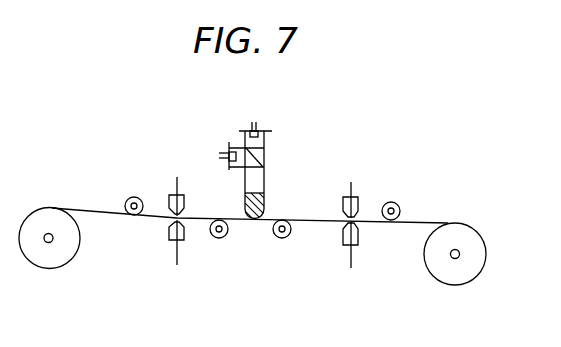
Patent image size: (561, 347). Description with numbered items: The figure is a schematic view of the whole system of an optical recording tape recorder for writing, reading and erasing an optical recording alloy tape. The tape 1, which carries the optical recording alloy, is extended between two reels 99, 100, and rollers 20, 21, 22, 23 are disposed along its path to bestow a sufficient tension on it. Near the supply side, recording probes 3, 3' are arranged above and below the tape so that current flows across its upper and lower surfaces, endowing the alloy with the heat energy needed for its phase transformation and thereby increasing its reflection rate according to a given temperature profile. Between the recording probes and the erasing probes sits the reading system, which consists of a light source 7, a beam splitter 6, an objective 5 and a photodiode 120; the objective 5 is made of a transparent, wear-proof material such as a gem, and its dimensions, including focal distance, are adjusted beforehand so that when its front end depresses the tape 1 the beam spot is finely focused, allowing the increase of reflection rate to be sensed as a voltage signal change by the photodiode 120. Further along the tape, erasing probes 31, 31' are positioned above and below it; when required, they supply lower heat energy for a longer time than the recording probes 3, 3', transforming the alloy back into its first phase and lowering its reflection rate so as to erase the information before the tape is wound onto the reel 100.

The tape 1 is at (97, 208).
The recording probe 3 is at (164, 192).
The recording probe 3' is at (163, 247).
The objective 5 is at (264, 203).
The beam splitter 6 is at (264, 162).
The light source 7 is at (219, 150).
The roller 20 is at (133, 197).
The roller 21 is at (216, 239).
The roller 22 is at (282, 239).
The roller 23 is at (395, 202).
The erasing probe 31 is at (366, 180).
The erasing probe 31' is at (374, 254).
The reel 99 is at (67, 264).
The reel 100 is at (473, 283).
The photodiode 120 is at (262, 112).